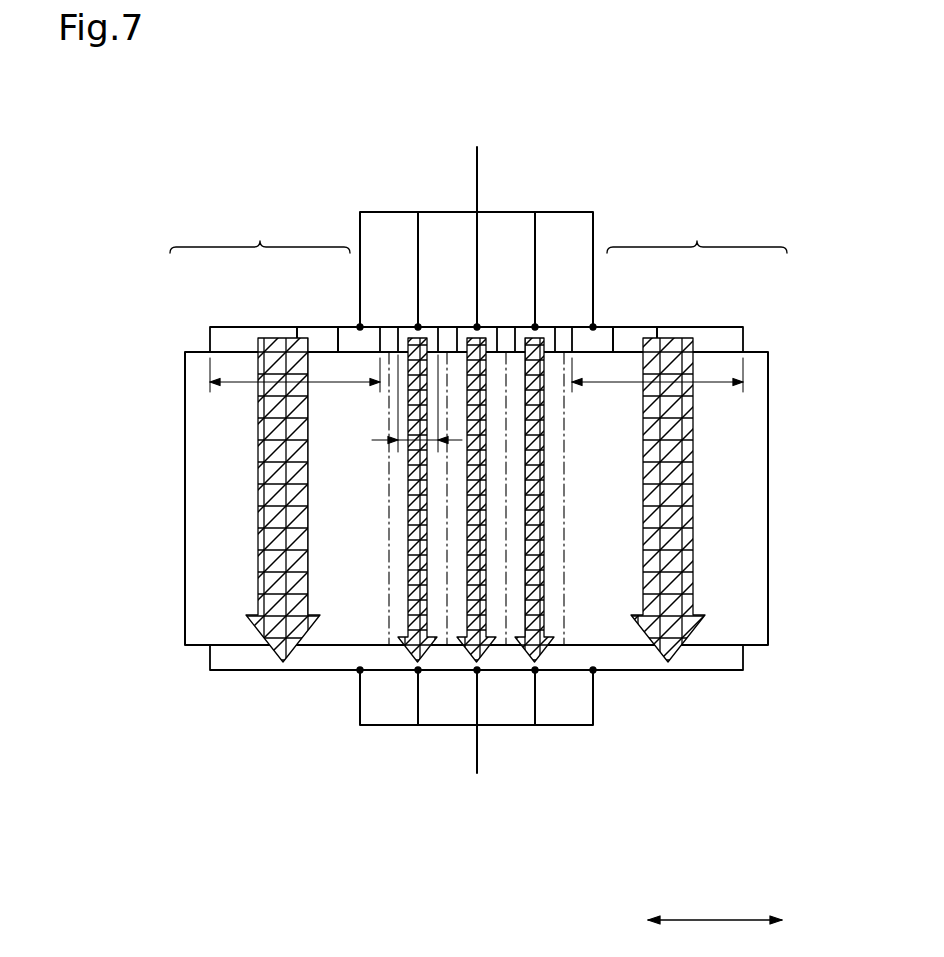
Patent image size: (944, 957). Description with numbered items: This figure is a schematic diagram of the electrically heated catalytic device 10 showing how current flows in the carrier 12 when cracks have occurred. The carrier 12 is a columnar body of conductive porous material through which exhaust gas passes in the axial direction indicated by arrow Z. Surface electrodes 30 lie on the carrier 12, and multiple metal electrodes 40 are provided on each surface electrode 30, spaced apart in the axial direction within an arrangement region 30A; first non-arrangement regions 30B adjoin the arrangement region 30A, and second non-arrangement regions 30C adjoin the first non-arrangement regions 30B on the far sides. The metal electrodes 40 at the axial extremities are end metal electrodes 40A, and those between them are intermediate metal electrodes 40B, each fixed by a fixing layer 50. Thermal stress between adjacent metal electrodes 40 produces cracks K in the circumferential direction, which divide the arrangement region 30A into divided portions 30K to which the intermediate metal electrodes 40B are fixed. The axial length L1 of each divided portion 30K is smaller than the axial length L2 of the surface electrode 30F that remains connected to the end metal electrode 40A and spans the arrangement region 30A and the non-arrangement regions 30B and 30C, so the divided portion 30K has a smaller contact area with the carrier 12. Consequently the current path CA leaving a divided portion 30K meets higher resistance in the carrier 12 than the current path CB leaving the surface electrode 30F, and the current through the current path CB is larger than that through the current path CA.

The electrically heated catalytic device 10 is at (130, 222).
The carrier 12 is at (769, 518).
The surface electrode 30 is at (745, 339).
The arrangement region 30A is at (347, 327).
The first non-arrangement region 30B is at (310, 327).
The second non-arrangement region 30C is at (228, 327).
The surface electrode electrically connected to the end metal electrode 30F is at (478, 281).
The divided portion 30K is at (420, 327).
The metal electrode 40 is at (477, 162).
The end metal electrode 40A is at (356, 228).
The intermediate metal electrode 40B is at (477, 227).
The fixing layer 50 is at (596, 672).
The current path CA is at (467, 552).
The current path CB is at (258, 497).
The crack K is at (389, 345).
The length of the divided portion L1 is at (403, 447).
The length of the surface electrode 30F L2 is at (323, 382).
The arrow indicating axial direction Z is at (715, 907).